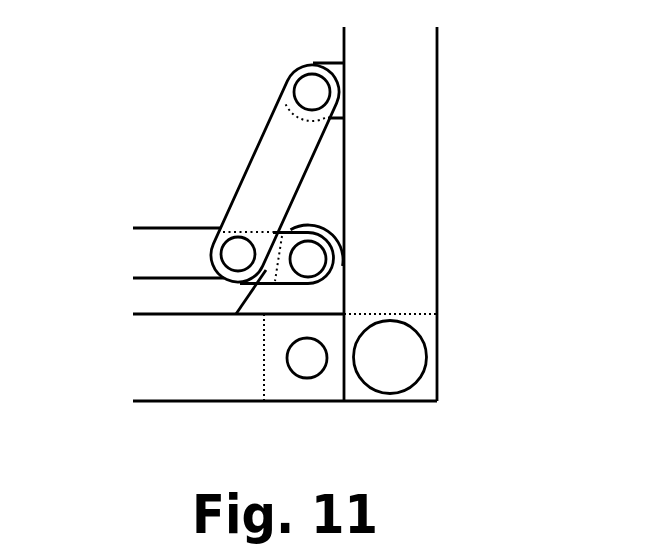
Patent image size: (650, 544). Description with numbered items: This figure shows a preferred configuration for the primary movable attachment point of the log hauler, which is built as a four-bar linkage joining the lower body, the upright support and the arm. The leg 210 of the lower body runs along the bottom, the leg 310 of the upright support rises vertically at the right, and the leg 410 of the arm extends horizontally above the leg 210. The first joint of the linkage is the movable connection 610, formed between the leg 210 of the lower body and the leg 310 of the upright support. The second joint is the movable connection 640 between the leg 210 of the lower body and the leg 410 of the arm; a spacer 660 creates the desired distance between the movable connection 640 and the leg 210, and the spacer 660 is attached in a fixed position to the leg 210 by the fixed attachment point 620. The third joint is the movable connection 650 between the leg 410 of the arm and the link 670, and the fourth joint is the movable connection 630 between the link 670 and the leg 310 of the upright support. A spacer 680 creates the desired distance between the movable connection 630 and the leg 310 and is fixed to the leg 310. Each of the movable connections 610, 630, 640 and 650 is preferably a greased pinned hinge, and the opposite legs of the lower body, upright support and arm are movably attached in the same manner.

The leg 210 is at (285, 357).
The leg 310 is at (390, 214).
The leg 410 is at (178, 253).
The movable attachment point 610 is at (397, 364).
The fixed attachment point 620 is at (301, 366).
The movable attachment point 630 is at (306, 92).
The movable attachment point 640 is at (326, 260).
The movable attachment point 650 is at (238, 246).
The spacer 660 is at (291, 301).
The link 670 is at (277, 174).
The spacer 680 is at (336, 58).